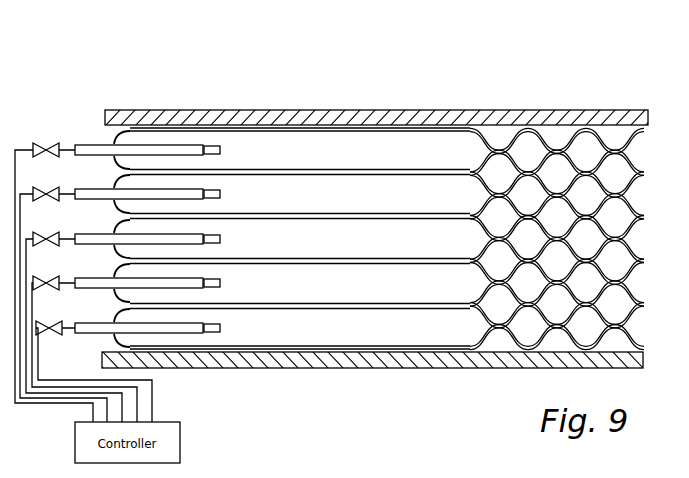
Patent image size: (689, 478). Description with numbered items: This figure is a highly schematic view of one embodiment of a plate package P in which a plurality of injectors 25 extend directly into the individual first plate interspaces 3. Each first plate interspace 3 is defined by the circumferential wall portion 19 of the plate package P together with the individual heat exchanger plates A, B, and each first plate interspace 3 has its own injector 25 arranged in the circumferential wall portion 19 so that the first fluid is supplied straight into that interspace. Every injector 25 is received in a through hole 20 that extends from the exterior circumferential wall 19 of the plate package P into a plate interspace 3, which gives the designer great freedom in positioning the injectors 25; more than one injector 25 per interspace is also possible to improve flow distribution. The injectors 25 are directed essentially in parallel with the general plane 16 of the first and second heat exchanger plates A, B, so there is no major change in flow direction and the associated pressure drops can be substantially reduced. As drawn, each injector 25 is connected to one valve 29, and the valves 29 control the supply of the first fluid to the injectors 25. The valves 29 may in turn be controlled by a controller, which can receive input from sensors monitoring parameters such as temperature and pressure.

The first plate interspace 3 is at (442, 150).
The general plane 16 is at (437, 310).
The circumferential wall portion 19 is at (117, 343).
The through hole 20 is at (114, 141).
The injector 25 is at (191, 147).
The valve 29 is at (47, 143).
The plate package P is at (500, 88).
The heat exchanger plate A is at (596, 132).
The heat exchanger plate B is at (632, 152).